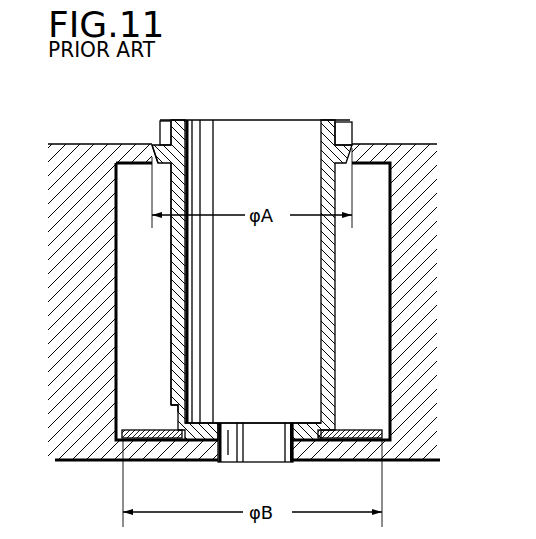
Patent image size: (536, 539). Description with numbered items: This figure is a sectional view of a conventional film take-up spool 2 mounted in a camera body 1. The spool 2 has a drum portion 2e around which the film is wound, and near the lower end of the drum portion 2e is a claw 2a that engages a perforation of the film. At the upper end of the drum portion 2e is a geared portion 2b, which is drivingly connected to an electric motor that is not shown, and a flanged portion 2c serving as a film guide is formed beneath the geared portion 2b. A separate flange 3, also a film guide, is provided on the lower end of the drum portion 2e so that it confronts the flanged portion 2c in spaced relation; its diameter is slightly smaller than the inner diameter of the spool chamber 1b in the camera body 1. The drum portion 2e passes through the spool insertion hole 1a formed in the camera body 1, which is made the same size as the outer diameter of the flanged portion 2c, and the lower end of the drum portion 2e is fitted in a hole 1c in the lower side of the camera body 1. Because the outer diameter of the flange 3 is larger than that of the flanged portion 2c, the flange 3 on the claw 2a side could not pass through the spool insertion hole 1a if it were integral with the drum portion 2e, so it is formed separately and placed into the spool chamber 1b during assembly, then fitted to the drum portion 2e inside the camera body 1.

The camera body 1 is at (65, 450).
The spool insertion hole 1a is at (347, 140).
The spool chamber 1b is at (384, 404).
The hole 1c is at (301, 460).
The film take-up spool 2 is at (296, 117).
The claw 2a is at (172, 410).
The geared portion 2b is at (161, 130).
The flanged portion 2c is at (156, 146).
The drum portion 2e is at (172, 262).
The flange 3 is at (120, 442).